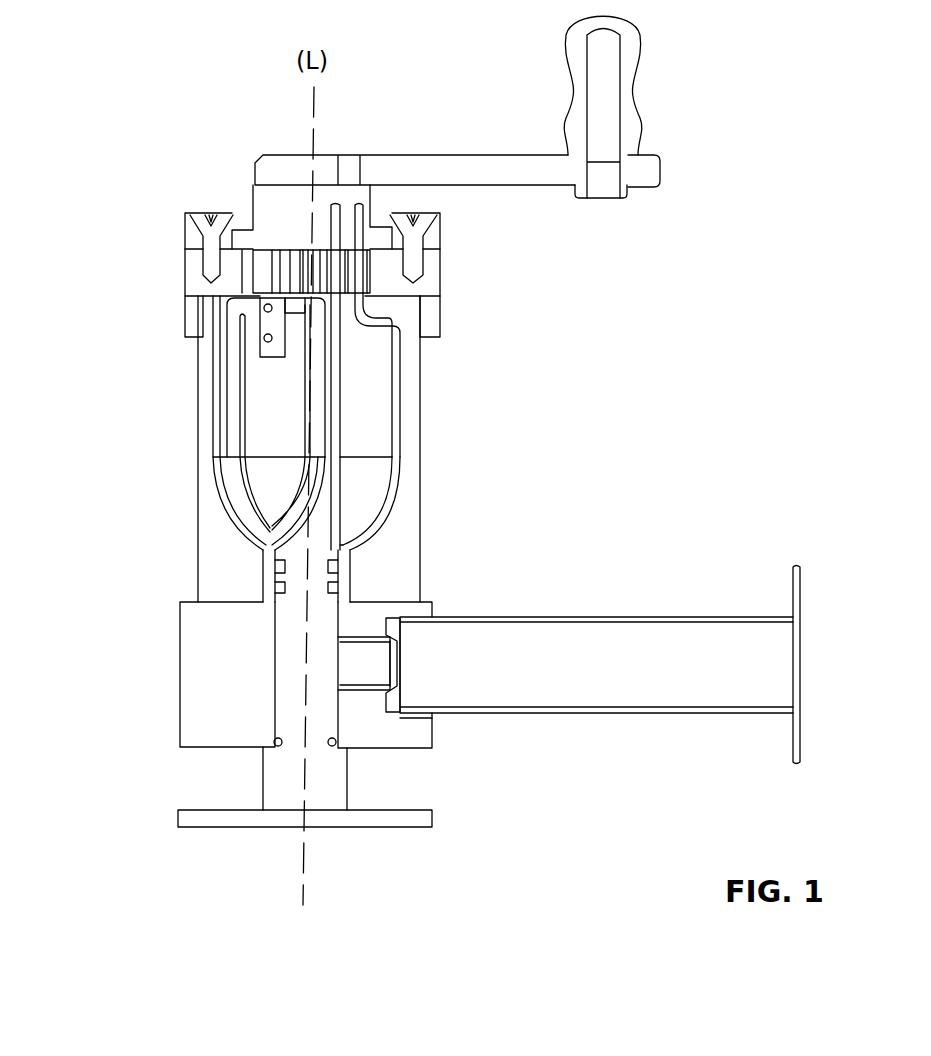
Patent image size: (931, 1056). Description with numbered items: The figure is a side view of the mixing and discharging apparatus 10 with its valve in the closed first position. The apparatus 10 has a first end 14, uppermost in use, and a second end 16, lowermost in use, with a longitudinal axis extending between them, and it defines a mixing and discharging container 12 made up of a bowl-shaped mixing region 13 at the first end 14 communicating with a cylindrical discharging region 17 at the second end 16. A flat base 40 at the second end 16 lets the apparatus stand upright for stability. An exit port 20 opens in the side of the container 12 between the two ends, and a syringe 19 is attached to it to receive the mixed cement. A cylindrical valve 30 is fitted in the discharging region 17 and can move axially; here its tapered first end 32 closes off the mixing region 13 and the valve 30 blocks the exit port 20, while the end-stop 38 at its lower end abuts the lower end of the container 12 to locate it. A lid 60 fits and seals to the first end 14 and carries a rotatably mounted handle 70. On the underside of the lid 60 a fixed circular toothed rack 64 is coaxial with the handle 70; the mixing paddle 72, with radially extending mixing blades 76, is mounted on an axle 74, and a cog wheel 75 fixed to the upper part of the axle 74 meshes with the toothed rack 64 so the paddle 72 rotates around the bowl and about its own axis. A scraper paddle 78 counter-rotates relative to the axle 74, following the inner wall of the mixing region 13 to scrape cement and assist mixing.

The mixing and discharging apparatus 10 is at (775, 190).
The mixing and discharging container 12 is at (213, 418).
The mixing region 13 is at (367, 418).
The first end 14 is at (82, 233).
The second end 16 is at (77, 672).
The discharging region 17 is at (338, 707).
The syringe 19 is at (688, 635).
The exit port 20 is at (338, 667).
The cylindrical valve 30 is at (292, 632).
The first end of valve 32 is at (313, 532).
The end-stop 38 is at (335, 778).
The flat base 40 is at (422, 817).
The lid 60 is at (430, 265).
The toothed rack 64 is at (370, 283).
The handle 70 is at (652, 165).
The mixing paddle 72 is at (235, 470).
The axle 74 is at (272, 318).
The cog wheel 75 is at (265, 268).
The mixing blades 76 is at (317, 402).
The scraper paddle 78 is at (398, 380).